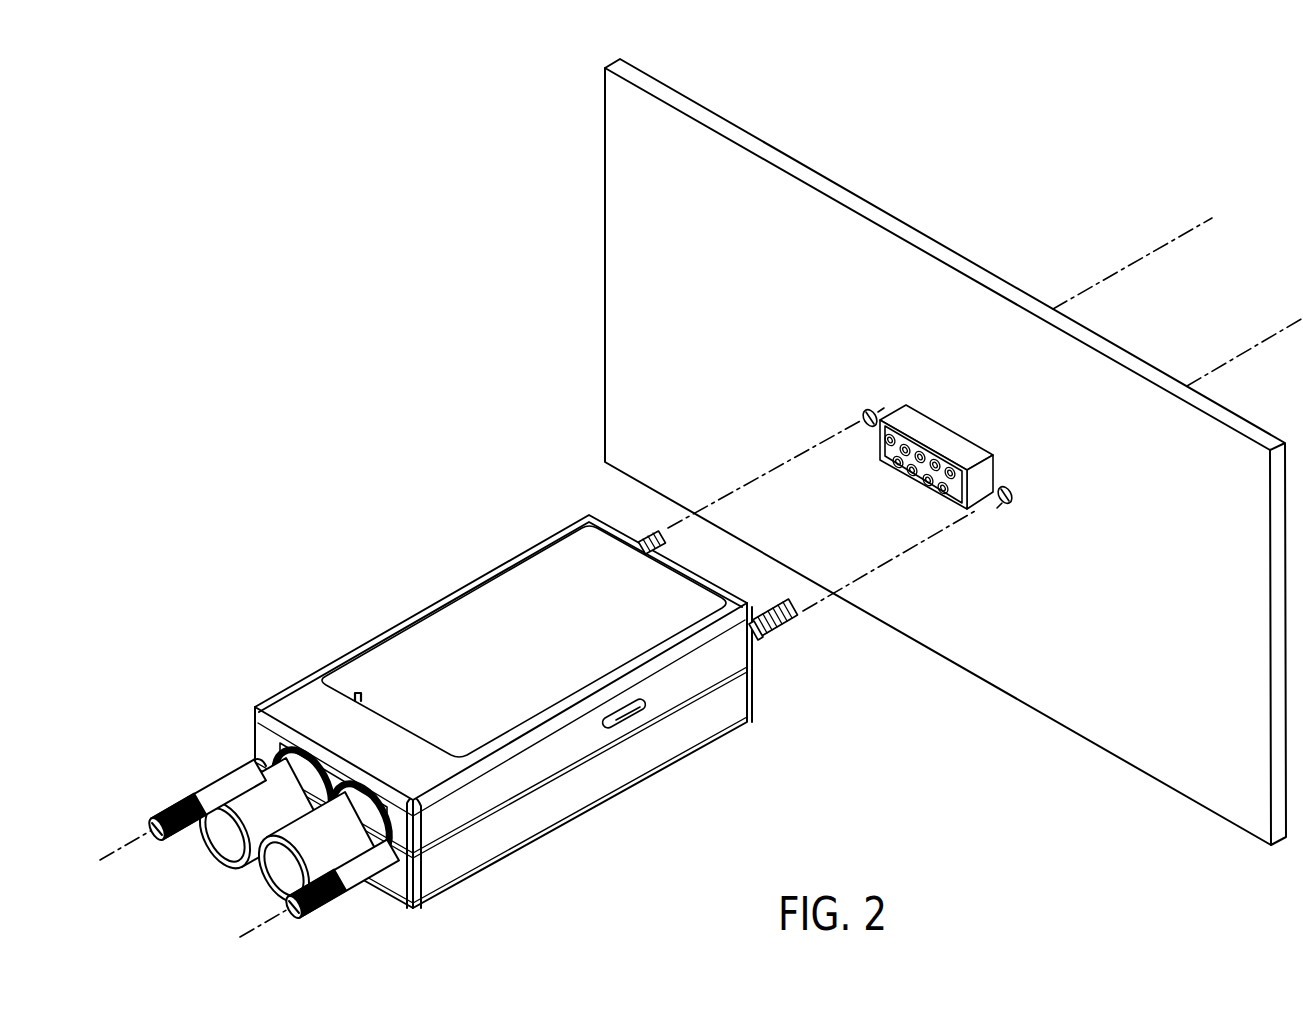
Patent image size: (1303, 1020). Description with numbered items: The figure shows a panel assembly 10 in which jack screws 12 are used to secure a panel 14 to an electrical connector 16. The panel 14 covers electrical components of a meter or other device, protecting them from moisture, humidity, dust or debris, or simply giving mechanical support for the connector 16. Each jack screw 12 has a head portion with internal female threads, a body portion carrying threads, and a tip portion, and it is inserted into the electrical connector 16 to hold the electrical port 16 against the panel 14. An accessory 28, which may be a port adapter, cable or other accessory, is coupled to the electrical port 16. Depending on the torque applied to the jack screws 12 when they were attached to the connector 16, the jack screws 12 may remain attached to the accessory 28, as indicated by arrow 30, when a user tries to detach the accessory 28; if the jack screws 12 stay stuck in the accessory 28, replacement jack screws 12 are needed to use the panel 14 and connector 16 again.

The communication system 10 is at (129, 104).
The jack screw 12 is at (512, 717).
The panel 14 is at (834, 182).
The electrical connector 16 is at (938, 430).
The accessory 28 is at (397, 590).
The arrow 30 is at (786, 708).